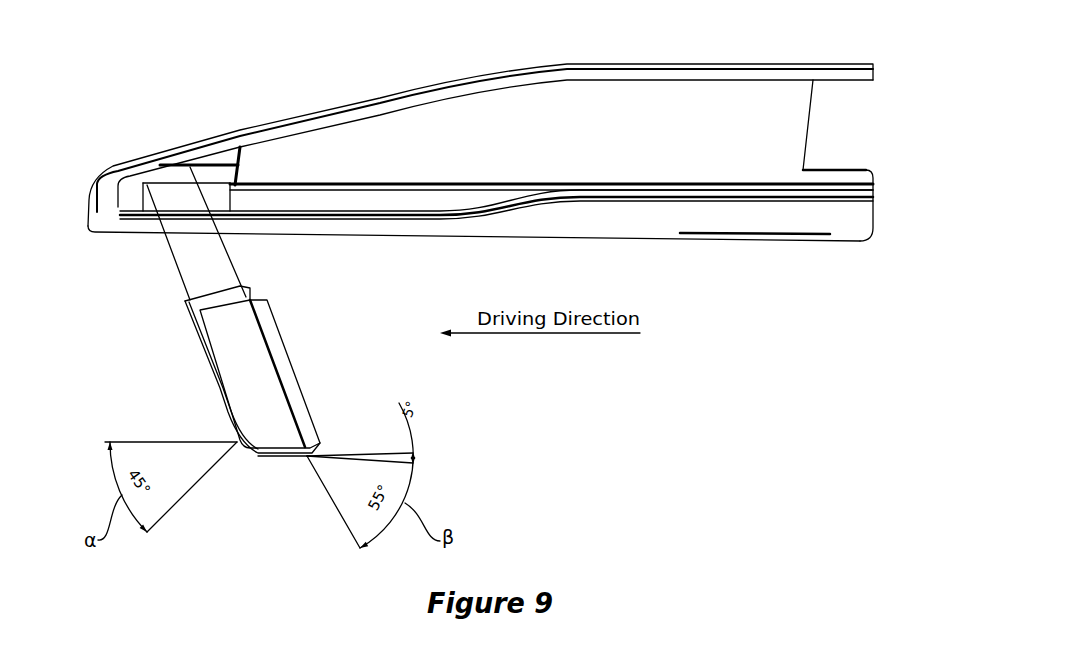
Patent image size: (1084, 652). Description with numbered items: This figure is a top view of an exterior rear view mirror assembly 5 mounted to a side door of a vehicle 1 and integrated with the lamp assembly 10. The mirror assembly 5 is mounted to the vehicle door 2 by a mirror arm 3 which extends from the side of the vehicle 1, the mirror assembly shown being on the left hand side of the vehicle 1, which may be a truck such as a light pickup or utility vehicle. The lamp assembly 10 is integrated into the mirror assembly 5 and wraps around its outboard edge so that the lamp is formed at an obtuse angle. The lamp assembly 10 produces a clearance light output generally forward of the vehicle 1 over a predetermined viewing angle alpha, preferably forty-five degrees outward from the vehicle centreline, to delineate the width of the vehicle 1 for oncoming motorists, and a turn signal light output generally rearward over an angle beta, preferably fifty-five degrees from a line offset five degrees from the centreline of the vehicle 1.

The vehicle 1 is at (295, 87).
The vehicle door 2 is at (570, 65).
The mirror arm 3 is at (187, 253).
The exterior rear view mirror assembly 5 is at (284, 365).
The lamp assembly 10 is at (272, 460).